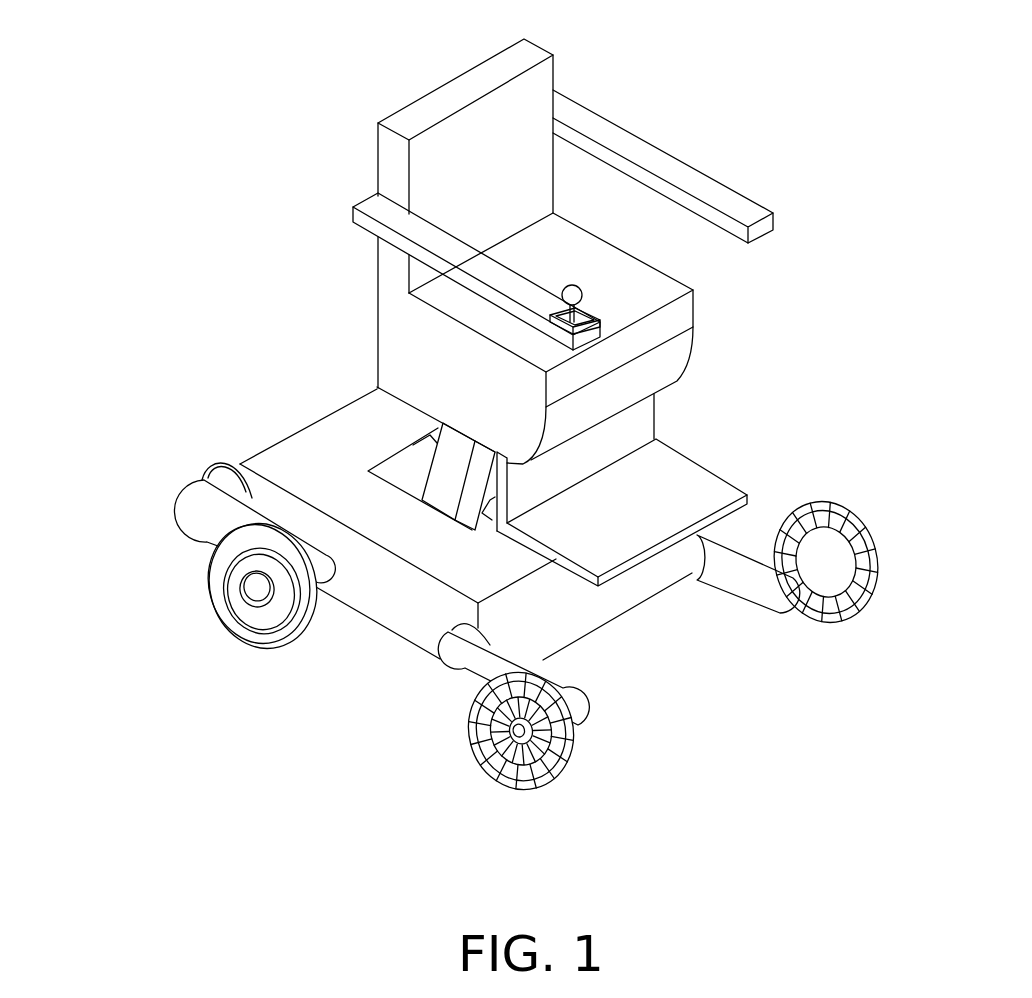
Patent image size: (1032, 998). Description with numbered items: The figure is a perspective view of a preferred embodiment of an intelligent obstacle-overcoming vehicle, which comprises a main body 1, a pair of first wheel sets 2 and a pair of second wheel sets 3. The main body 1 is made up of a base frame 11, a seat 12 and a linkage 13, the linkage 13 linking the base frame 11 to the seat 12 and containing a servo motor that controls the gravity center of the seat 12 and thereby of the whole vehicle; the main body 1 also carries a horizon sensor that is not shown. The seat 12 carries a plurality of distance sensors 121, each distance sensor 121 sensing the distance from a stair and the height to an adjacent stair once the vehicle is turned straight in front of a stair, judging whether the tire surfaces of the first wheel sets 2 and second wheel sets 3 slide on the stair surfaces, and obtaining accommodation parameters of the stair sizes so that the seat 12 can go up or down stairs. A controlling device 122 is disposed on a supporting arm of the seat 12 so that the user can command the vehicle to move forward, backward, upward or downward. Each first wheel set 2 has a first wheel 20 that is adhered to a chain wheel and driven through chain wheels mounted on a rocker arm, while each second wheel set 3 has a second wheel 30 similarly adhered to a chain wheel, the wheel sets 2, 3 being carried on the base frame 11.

The main body 1 is at (285, 227).
The base frame 11 is at (240, 464).
The seat 12 is at (375, 311).
The linkage 13 is at (433, 442).
The distance sensor 121 is at (747, 494).
The controlling device 122 is at (600, 331).
The first wheel set 2 is at (608, 700).
The first wheel 20 is at (483, 753).
The second wheel set 3 is at (173, 577).
The second wheel 30 is at (237, 626).